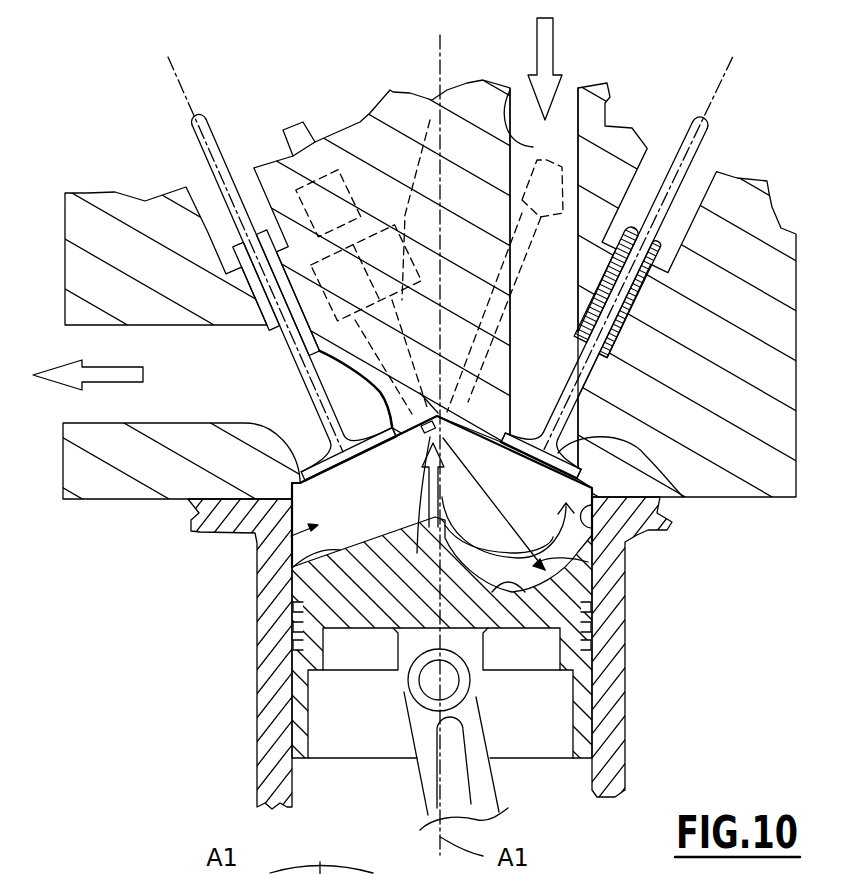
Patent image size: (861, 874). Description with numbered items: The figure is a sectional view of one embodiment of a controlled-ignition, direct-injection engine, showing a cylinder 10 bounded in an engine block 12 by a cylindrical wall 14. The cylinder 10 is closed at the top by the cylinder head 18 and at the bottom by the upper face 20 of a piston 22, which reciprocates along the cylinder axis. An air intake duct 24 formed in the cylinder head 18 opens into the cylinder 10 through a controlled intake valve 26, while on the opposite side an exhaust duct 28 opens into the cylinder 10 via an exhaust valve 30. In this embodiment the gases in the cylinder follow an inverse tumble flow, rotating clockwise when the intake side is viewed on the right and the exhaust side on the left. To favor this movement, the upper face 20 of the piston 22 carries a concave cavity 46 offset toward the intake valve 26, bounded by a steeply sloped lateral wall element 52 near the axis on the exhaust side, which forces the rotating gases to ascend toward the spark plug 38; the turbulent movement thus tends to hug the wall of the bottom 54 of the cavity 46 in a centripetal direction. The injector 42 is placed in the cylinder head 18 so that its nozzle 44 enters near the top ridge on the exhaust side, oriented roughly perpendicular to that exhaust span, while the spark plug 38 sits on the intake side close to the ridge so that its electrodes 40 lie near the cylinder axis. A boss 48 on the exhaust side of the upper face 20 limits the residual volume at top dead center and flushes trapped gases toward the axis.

The cylinder 10 is at (367, 533).
The engine block 12 is at (652, 676).
The cylindrical wall 14 is at (592, 532).
The cylinder head 18 is at (758, 413).
The upper face 20 is at (340, 577).
The piston 22 is at (292, 596).
The air intake duct 24 is at (467, 153).
The intake valve 26 is at (583, 418).
The exhaust duct 28 is at (140, 365).
The exhaust valve 30 is at (308, 437).
The spark plug 38 is at (413, 97).
The electrodes 40 is at (485, 452).
The injector 42 is at (360, 115).
The nozzle 44 is at (417, 427).
The concave cavity 46 is at (588, 548).
The boss 48 is at (423, 517).
The lateral wall element 52 is at (425, 520).
The bottom 54 is at (497, 582).